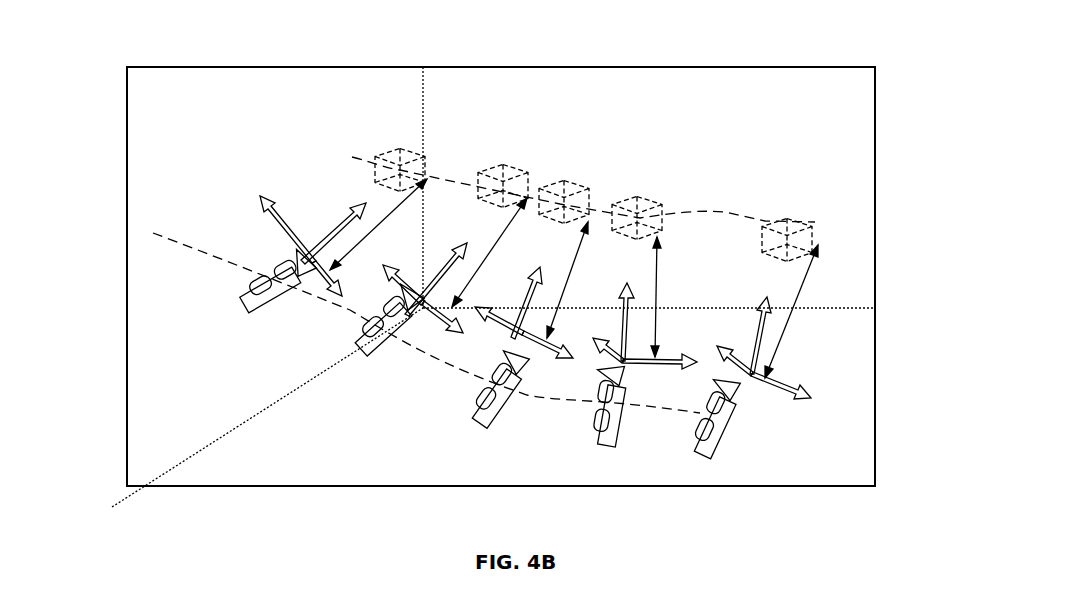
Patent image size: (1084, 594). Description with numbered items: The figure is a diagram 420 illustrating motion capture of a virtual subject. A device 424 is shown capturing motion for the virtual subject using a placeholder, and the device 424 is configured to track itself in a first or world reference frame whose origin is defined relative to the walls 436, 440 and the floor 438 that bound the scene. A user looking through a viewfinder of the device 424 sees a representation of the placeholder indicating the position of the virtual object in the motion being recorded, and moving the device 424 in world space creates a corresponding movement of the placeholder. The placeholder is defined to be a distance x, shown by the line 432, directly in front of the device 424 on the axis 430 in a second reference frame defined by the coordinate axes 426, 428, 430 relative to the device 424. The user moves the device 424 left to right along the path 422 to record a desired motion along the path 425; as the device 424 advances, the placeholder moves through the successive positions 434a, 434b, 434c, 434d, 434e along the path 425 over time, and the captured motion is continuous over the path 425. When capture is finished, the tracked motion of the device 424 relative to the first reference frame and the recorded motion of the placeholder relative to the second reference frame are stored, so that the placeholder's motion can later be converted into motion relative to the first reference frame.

The virtual scene view 420 is at (733, 44).
The wall 440 is at (817, 92).
The wall 436 is at (188, 128).
The floor 438 is at (337, 452).
The path 422 is at (438, 362).
The device 424 is at (267, 263).
The path 425 is at (725, 212).
The coordinate axis 426 is at (310, 242).
The coordinate axis 428 is at (318, 285).
The axis 430 is at (311, 252).
The line 432 is at (383, 217).
The position of placeholder 434a is at (388, 147).
The position of placeholder 434b is at (505, 165).
The position of placeholder 434c is at (572, 183).
The position of placeholder 434d is at (650, 195).
The position of placeholder 434e is at (797, 213).